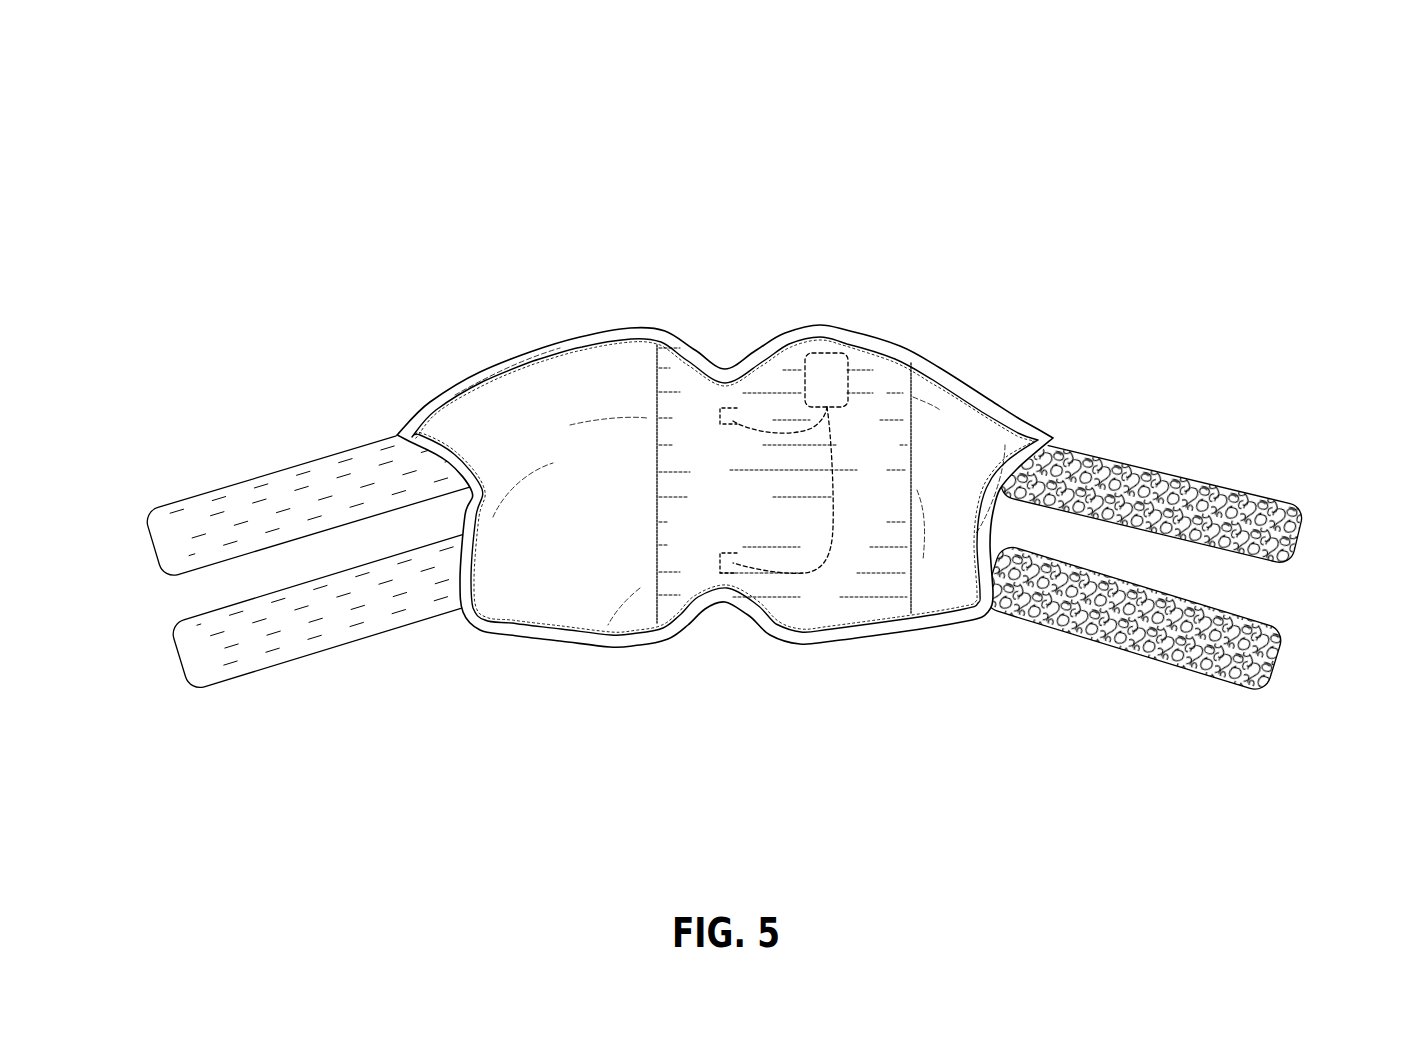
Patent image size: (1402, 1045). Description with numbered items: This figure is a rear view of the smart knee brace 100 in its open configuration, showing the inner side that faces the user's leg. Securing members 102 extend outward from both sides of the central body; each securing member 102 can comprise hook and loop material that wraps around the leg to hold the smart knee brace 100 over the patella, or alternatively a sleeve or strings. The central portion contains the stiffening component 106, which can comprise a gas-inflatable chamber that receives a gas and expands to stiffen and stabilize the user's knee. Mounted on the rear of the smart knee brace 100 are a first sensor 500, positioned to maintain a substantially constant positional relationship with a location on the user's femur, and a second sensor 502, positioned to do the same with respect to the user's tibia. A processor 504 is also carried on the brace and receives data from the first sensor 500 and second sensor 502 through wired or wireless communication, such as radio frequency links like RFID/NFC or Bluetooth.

The smart knee brace 100 is at (407, 173).
The securing member 102 is at (187, 560).
The stiffening component 106 is at (522, 593).
The first sensor 500 is at (727, 408).
The second sensor 502 is at (727, 573).
The processor 504 is at (833, 372).